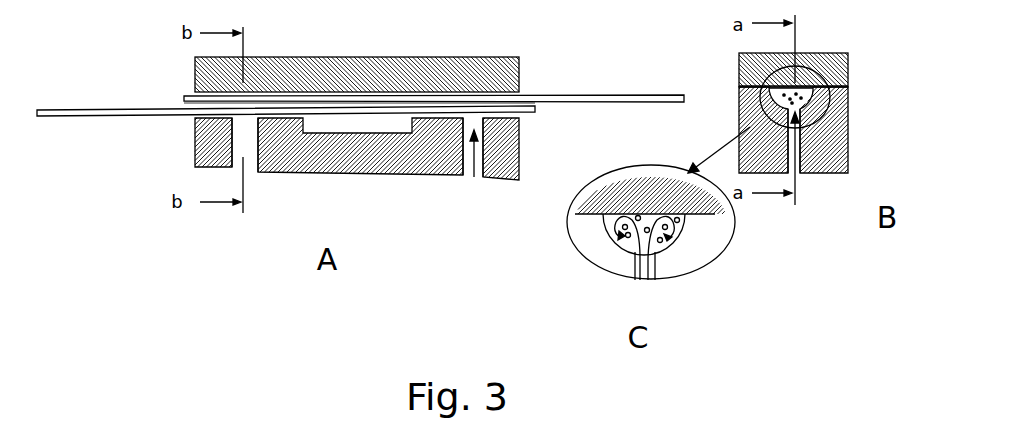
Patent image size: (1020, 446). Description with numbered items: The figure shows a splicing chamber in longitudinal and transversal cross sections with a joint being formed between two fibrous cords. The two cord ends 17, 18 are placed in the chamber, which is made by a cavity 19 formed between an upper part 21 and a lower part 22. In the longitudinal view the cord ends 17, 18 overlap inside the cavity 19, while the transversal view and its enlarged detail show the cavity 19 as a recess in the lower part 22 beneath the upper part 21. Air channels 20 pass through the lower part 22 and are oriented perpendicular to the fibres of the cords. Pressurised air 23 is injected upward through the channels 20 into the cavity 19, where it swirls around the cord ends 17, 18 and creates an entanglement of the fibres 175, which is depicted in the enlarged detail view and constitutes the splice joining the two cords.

In FIG. 3A, the cord end 17 is at (108, 111).
In FIG. 3B, the cord end 17 is at (800, 93).
In FIG. 3A, the cord end 18 is at (567, 97).
In FIG. 3B, the cord end 18 is at (748, 63).
In FIG. 3A, the cavity 19 is at (212, 118).
In FIG. 3B, the cavity 19 is at (810, 97).
In FIG. 3A, the air channels 20 is at (250, 167).
In FIG. 3B, the air channels 20 is at (798, 163).
In FIG. 3C, the air channels 20 is at (653, 282).
In FIG. 3A, the part 21 is at (378, 68).
In FIG. 3B, the part 21 is at (837, 67).
In FIG. 3C, the part 21 is at (623, 193).
In FIG. 3A, the part 22 is at (210, 155).
In FIG. 3B, the part 22 is at (830, 122).
In FIG. 3C, the part 22 is at (707, 226).
In FIG. 3A, the pressurised air 23 is at (474, 177).
In FIG. 3B, the pressurised air 23 is at (795, 137).
In FIG. 3C, the pressurised air 23 is at (638, 243).
In FIG. 3C, the entanglement of the fibres 175 is at (663, 245).